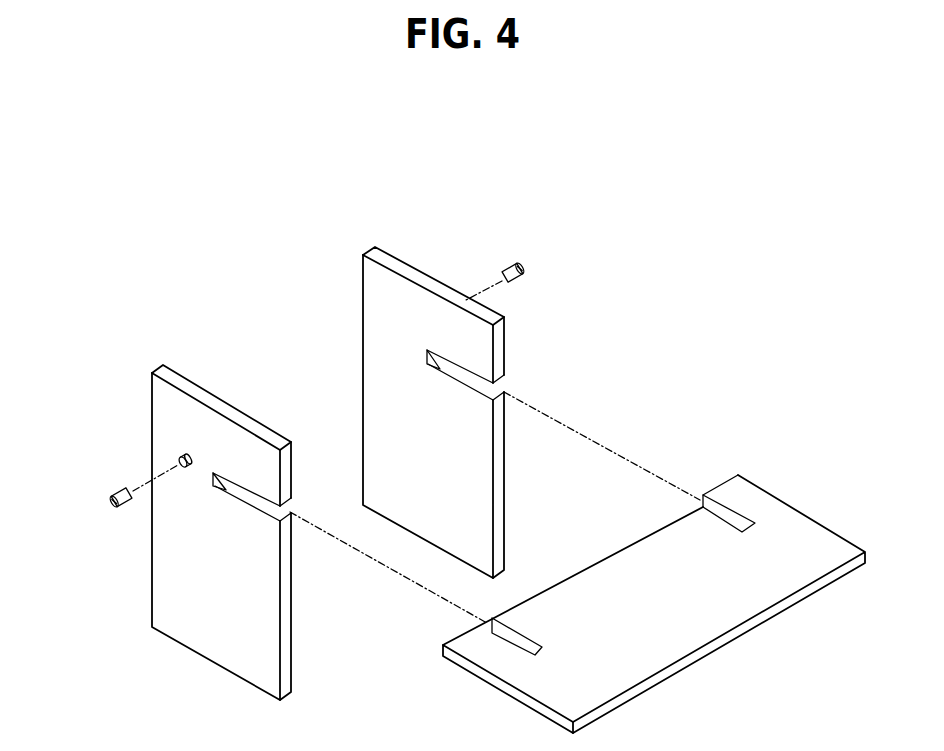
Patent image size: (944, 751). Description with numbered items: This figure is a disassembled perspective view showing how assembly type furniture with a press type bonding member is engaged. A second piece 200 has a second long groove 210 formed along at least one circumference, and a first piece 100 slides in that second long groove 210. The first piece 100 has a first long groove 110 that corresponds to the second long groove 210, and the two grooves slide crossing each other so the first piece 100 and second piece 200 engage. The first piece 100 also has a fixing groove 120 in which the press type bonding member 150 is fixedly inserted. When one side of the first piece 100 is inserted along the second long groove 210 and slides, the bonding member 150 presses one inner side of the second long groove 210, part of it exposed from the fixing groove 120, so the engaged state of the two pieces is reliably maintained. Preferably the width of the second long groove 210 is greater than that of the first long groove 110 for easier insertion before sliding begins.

The first piece 100 is at (168, 422).
The first long groove 110 is at (291, 512).
The fixing groove 120 is at (178, 464).
The press type bonding member 150 is at (118, 506).
The second piece 200 is at (792, 521).
The second long groove 210 is at (705, 500).